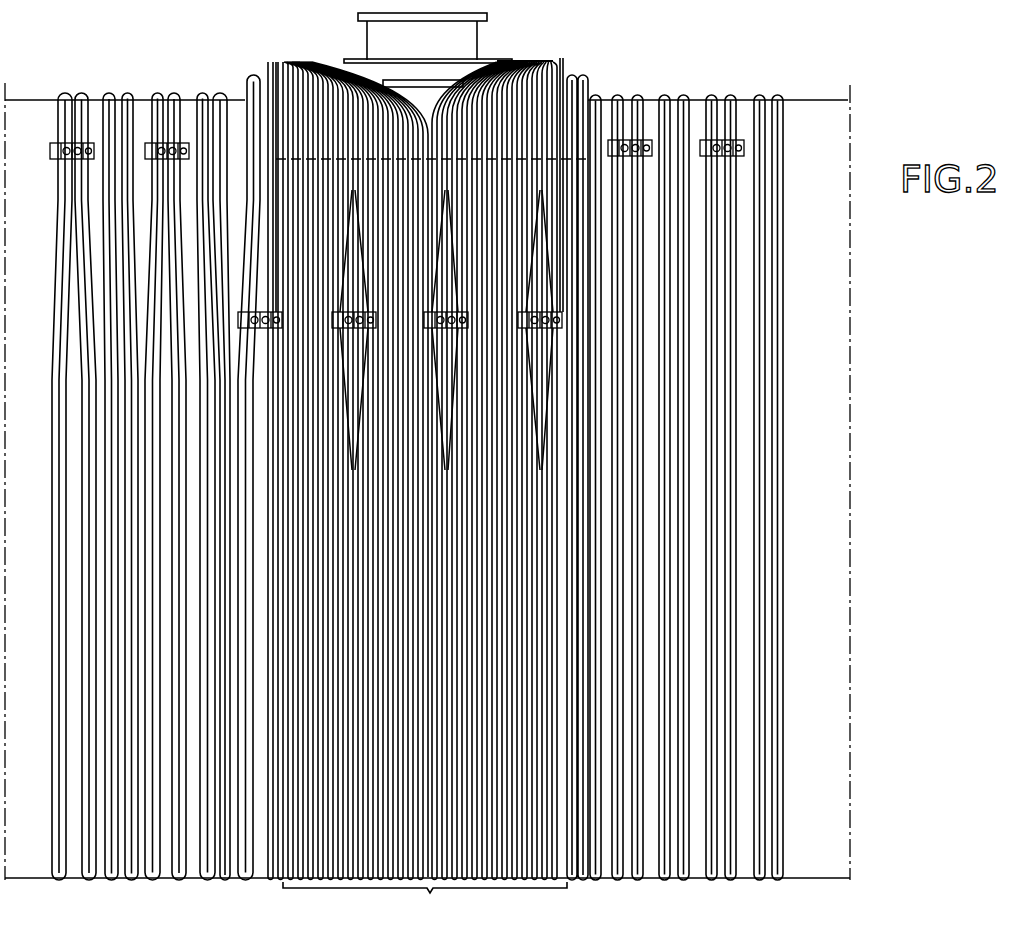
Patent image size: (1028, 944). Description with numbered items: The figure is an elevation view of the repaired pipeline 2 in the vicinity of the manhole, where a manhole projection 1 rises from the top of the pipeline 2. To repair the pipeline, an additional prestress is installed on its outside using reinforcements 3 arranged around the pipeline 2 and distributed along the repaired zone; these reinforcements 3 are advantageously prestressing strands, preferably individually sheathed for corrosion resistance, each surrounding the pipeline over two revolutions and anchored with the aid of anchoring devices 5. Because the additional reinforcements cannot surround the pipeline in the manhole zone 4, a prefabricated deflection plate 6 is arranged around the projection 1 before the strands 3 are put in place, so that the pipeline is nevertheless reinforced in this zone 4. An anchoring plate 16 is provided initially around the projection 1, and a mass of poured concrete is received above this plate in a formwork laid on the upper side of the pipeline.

The manhole projection 1 is at (388, 35).
The pipeline 2 is at (812, 140).
The prestressing reinforcements 3 is at (783, 527).
The manhole zone 4 is at (425, 902).
The anchoring devices 5 is at (167, 145).
The deflection plate 6 is at (553, 62).
The anchoring plate 16 is at (585, 80).